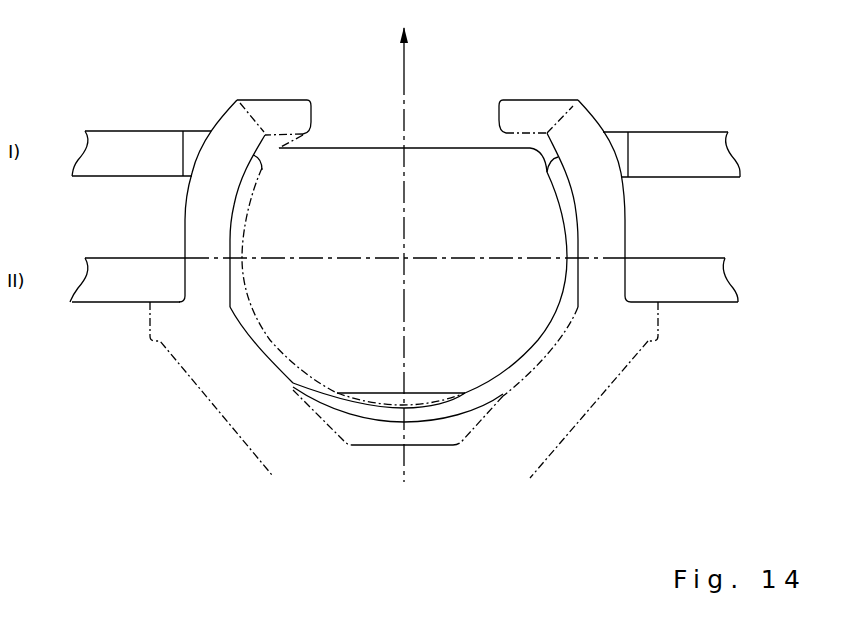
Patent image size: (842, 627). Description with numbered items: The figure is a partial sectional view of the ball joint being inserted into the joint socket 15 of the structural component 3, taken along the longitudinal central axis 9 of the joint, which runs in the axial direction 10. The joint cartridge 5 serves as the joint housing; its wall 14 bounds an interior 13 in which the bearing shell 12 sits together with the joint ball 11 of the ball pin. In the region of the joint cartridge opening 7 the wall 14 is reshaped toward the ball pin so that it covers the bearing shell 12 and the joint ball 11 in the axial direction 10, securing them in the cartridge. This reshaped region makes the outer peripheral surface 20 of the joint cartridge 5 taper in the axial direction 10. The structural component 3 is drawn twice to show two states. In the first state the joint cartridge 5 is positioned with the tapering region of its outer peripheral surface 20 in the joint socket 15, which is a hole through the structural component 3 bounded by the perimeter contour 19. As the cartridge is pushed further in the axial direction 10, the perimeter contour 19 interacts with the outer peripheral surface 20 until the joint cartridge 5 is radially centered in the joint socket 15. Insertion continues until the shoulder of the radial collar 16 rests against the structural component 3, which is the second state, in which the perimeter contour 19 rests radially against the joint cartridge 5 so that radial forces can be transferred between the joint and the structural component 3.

The structural component 3 is at (129, 134).
The joint cartridge 5 is at (563, 427).
The joint cartridge opening 7 is at (280, 112).
The longitudinal central axis 9 is at (404, 472).
The axial direction 10 is at (407, 50).
The joint ball 11 is at (278, 330).
The bearing shell 12 is at (296, 385).
The interior 13 is at (355, 435).
The wall 14 is at (230, 122).
The joint socket 15 is at (618, 138).
The radial collar 16 is at (653, 328).
The perimeter contour 19 is at (624, 171).
The outer peripheral surface 20 is at (185, 226).